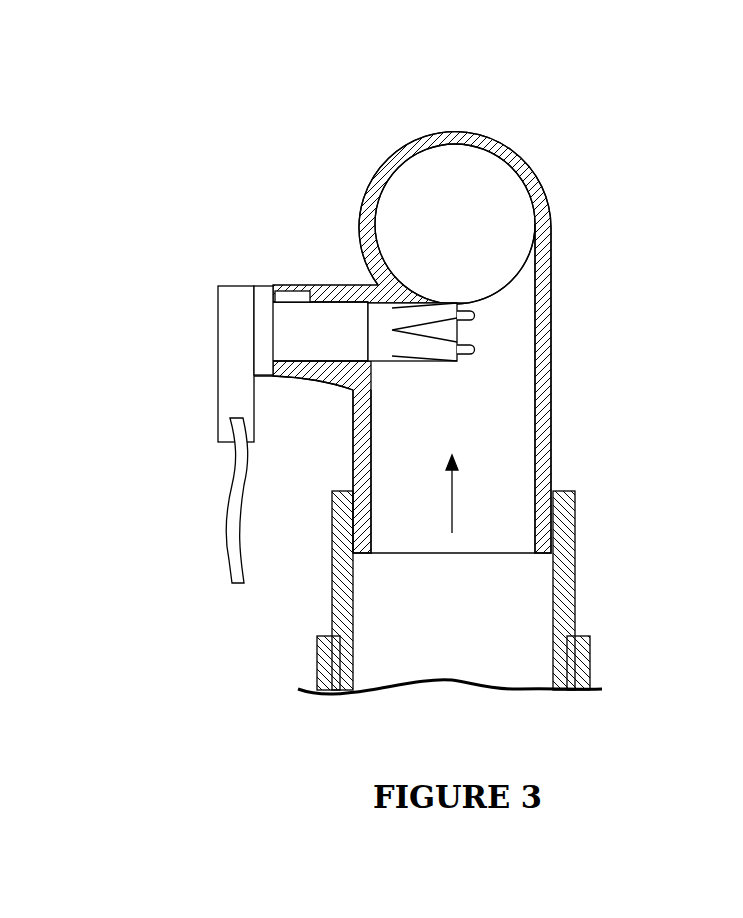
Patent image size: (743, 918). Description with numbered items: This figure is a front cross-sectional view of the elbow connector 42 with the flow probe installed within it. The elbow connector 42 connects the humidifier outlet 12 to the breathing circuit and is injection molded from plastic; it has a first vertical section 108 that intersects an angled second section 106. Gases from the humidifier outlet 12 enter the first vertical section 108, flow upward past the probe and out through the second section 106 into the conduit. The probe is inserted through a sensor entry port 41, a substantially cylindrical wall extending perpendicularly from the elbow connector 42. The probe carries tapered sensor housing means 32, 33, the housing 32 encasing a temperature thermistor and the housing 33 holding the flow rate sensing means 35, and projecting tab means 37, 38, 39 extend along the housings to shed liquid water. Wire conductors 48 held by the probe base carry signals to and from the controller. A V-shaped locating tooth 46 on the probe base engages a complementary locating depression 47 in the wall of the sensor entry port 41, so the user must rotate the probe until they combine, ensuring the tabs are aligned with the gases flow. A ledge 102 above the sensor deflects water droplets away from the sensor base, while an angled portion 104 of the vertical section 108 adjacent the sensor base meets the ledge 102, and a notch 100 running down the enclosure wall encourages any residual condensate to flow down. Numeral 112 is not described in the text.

The humidifier outlet 12 is at (331, 613).
The sensor housing means 32 is at (352, 425).
The sensor housing means 33 is at (365, 318).
The sensing means 35 is at (478, 316).
The tab means 37 is at (418, 317).
The tab means 38 is at (472, 343).
The tab means 39 is at (460, 330).
The sensor entry port 41 is at (300, 390).
The elbow connector 42 is at (555, 473).
The locating tooth 46 is at (273, 287).
The locating depression 47 is at (283, 297).
The wire conductors 48 is at (230, 511).
The notch 100 is at (352, 392).
The ledge 102 is at (410, 295).
The angled portion 104 is at (375, 323).
The second section 106 is at (453, 158).
The first vertical section 108 is at (500, 462).
The bottom wall 112 is at (502, 555).